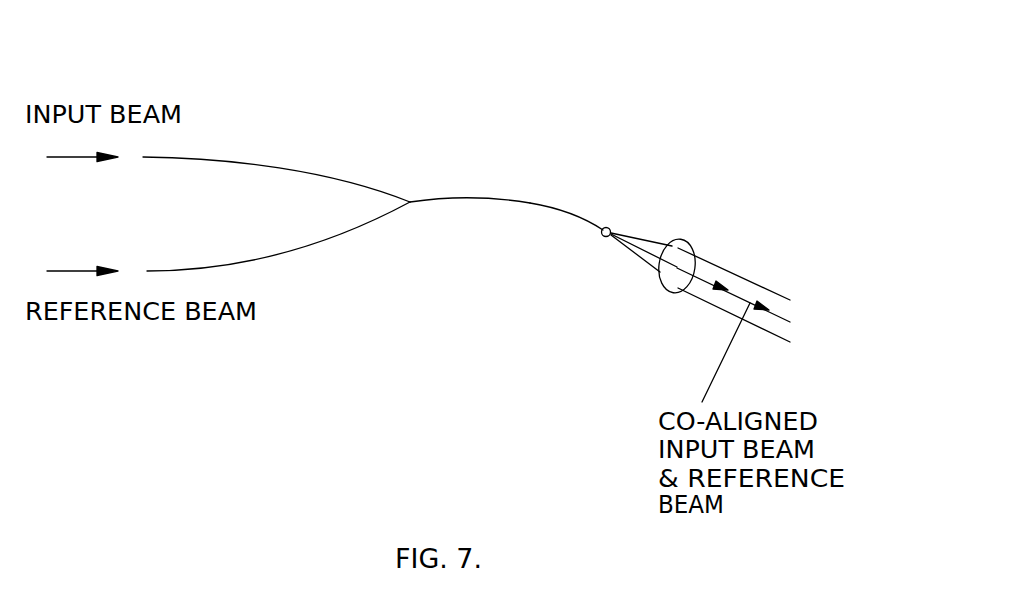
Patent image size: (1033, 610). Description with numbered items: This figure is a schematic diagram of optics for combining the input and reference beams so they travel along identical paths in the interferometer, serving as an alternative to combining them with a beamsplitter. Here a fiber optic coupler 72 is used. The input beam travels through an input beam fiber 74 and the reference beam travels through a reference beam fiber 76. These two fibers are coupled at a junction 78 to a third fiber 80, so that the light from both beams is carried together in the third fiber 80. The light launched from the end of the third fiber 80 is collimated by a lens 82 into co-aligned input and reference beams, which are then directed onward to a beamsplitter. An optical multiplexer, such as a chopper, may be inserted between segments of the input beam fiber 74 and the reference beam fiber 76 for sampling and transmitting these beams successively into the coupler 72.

The fiber optic coupler 72 is at (533, 154).
The input beam fiber 74 is at (243, 156).
The reference beam fiber 76 is at (290, 253).
The junction 78 is at (477, 133).
The third fiber 80 is at (527, 202).
The lens 82 is at (658, 275).